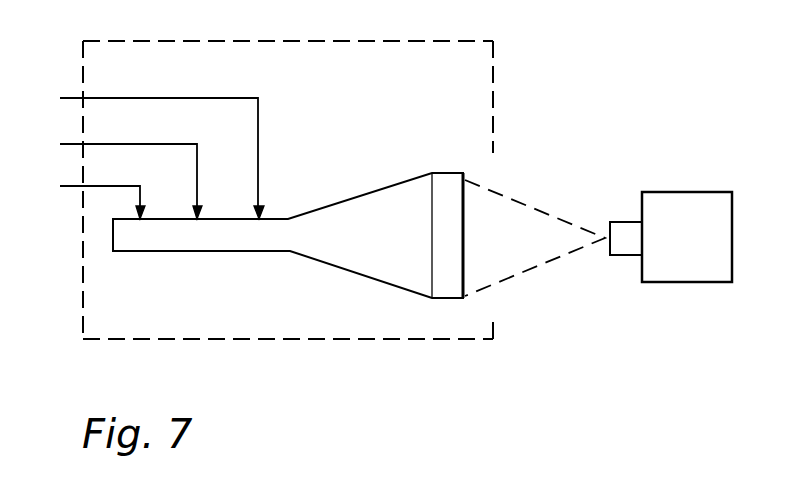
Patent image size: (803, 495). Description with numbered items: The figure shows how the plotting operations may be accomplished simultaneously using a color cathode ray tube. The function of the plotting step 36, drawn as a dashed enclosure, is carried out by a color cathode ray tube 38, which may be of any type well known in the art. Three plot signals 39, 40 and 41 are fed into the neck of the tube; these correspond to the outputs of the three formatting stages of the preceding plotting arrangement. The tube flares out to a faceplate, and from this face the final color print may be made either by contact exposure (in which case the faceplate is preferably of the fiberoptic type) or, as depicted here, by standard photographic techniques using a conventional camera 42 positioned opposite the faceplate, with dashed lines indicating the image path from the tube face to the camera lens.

The step 36 is at (493, 68).
The color cathode ray tube 38 is at (383, 188).
The plot signal 39 is at (146, 153).
The plot signal 40 is at (115, 176).
The plot signal 41 is at (86, 197).
The camera 42 is at (685, 192).